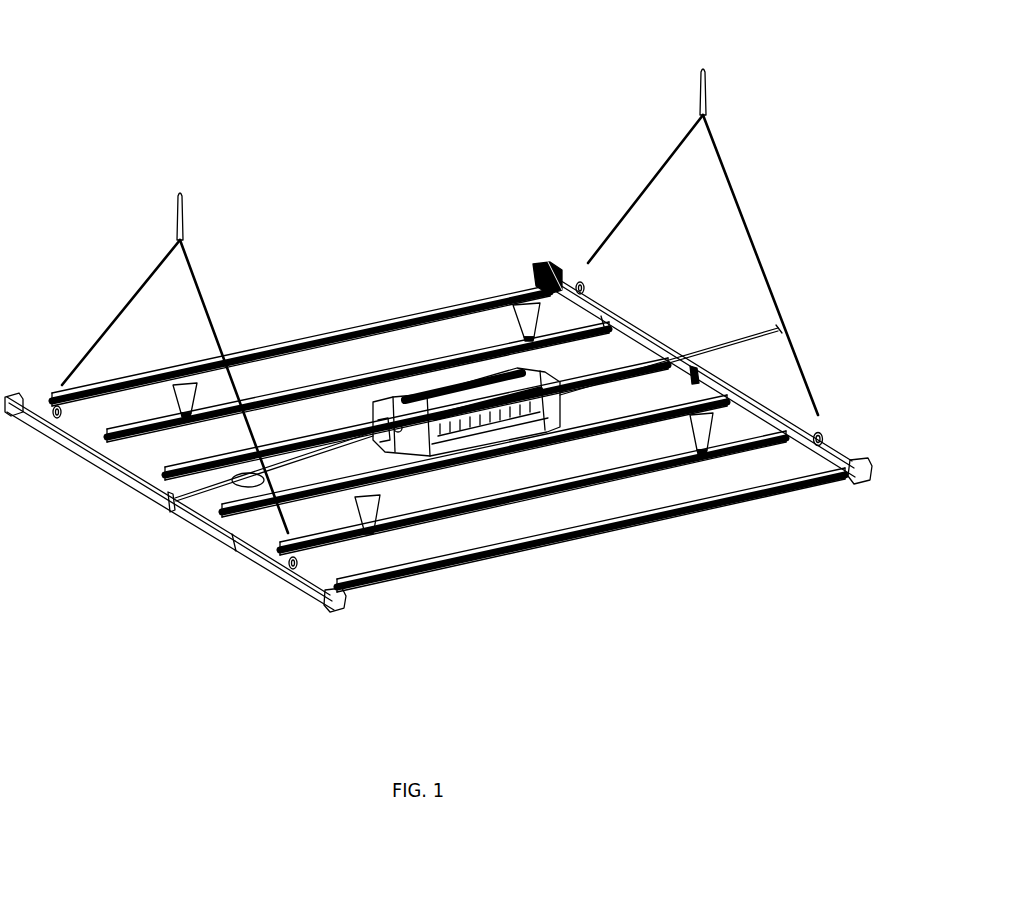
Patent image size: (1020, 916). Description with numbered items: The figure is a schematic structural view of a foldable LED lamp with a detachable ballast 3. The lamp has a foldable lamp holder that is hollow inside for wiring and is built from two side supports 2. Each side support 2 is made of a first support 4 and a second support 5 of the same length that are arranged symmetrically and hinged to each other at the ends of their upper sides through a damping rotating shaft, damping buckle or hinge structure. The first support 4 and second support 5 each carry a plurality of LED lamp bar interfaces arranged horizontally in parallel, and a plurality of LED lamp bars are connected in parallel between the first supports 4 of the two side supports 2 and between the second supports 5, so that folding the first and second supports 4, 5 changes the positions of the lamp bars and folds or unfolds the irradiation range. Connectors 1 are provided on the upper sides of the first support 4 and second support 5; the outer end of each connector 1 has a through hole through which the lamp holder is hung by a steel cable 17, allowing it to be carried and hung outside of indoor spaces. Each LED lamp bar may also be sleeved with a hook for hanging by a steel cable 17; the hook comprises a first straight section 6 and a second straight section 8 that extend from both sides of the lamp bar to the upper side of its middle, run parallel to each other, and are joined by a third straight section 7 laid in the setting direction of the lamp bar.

The connector 1 is at (824, 440).
The side support 2 is at (342, 610).
The ballast 3 is at (535, 450).
The first support 4 is at (277, 583).
The second support 5 is at (113, 477).
The first straight section 6 is at (527, 282).
The third straight section 7 is at (527, 268).
The second straight section 8 is at (560, 268).
The steel cable 17 is at (137, 287).